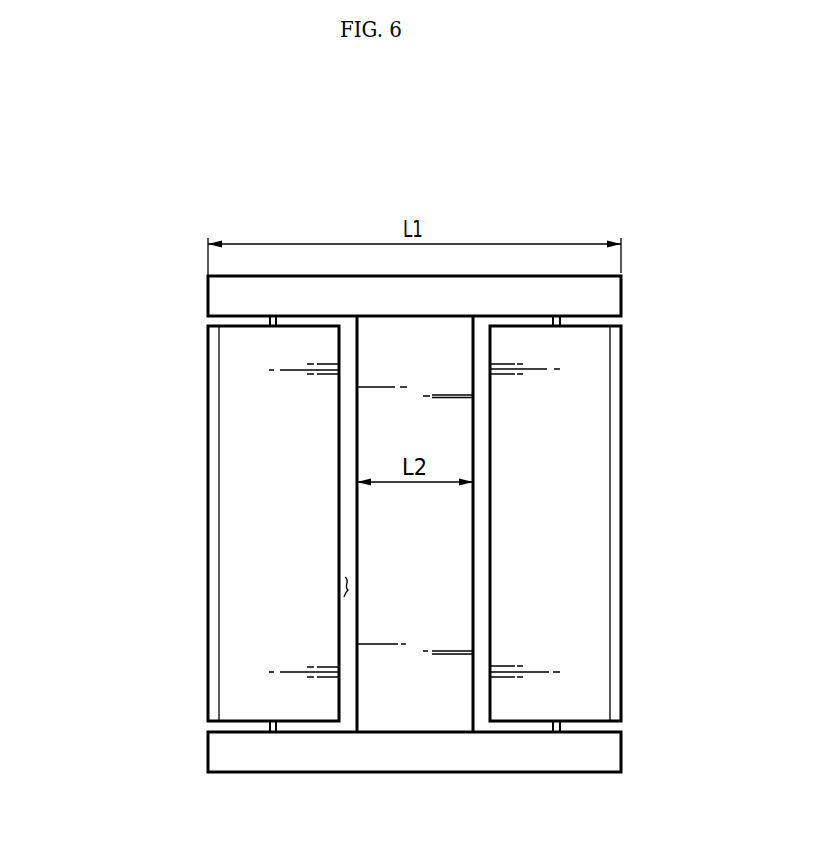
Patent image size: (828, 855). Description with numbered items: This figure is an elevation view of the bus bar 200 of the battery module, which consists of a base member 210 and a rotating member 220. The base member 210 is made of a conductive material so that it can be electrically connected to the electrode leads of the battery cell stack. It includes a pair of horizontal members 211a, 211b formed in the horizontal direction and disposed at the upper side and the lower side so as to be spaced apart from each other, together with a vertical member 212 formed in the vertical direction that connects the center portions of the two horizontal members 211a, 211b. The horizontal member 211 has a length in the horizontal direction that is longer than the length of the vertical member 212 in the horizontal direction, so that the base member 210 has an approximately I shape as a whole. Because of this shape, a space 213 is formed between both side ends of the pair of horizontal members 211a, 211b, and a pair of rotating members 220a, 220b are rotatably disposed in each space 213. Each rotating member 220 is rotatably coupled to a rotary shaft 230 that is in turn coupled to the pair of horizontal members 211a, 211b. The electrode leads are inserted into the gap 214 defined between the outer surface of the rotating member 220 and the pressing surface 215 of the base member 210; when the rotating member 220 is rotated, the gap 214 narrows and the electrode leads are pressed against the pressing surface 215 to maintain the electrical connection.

The bus bar 200 is at (205, 147).
The base member 210 is at (261, 220).
The horizontal member 211 is at (169, 259).
The upper horizontal member 211a is at (216, 298).
The lower horizontal member 211b is at (217, 753).
The vertical member 212 is at (455, 439).
The space 213 is at (347, 584).
The gap 214 is at (348, 692).
The pressing surface 215 is at (357, 667).
The rotating member 220 is at (104, 394).
The first rotating member 220a is at (233, 415).
The second rotating member 220b is at (596, 505).
The rotary shaft 230 is at (271, 320).